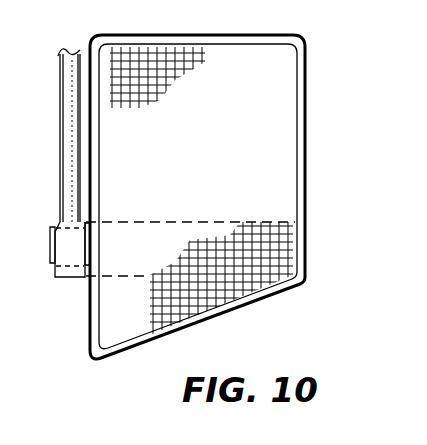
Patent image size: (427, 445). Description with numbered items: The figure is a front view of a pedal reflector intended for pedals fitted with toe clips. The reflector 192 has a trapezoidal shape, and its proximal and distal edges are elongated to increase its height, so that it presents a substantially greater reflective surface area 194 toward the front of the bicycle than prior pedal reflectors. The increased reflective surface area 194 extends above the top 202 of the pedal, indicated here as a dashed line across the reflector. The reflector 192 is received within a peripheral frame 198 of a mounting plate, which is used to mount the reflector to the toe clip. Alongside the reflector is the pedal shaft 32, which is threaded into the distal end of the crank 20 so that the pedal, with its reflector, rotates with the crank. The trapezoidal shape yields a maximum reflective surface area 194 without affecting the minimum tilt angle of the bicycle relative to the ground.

The crank 20 is at (72, 106).
The pedal shaft 32 is at (72, 226).
The reflector 192 is at (265, 128).
The reflective surface area 194 is at (194, 172).
The peripheral frame 198 is at (300, 158).
The top of the pedal 202 is at (201, 221).